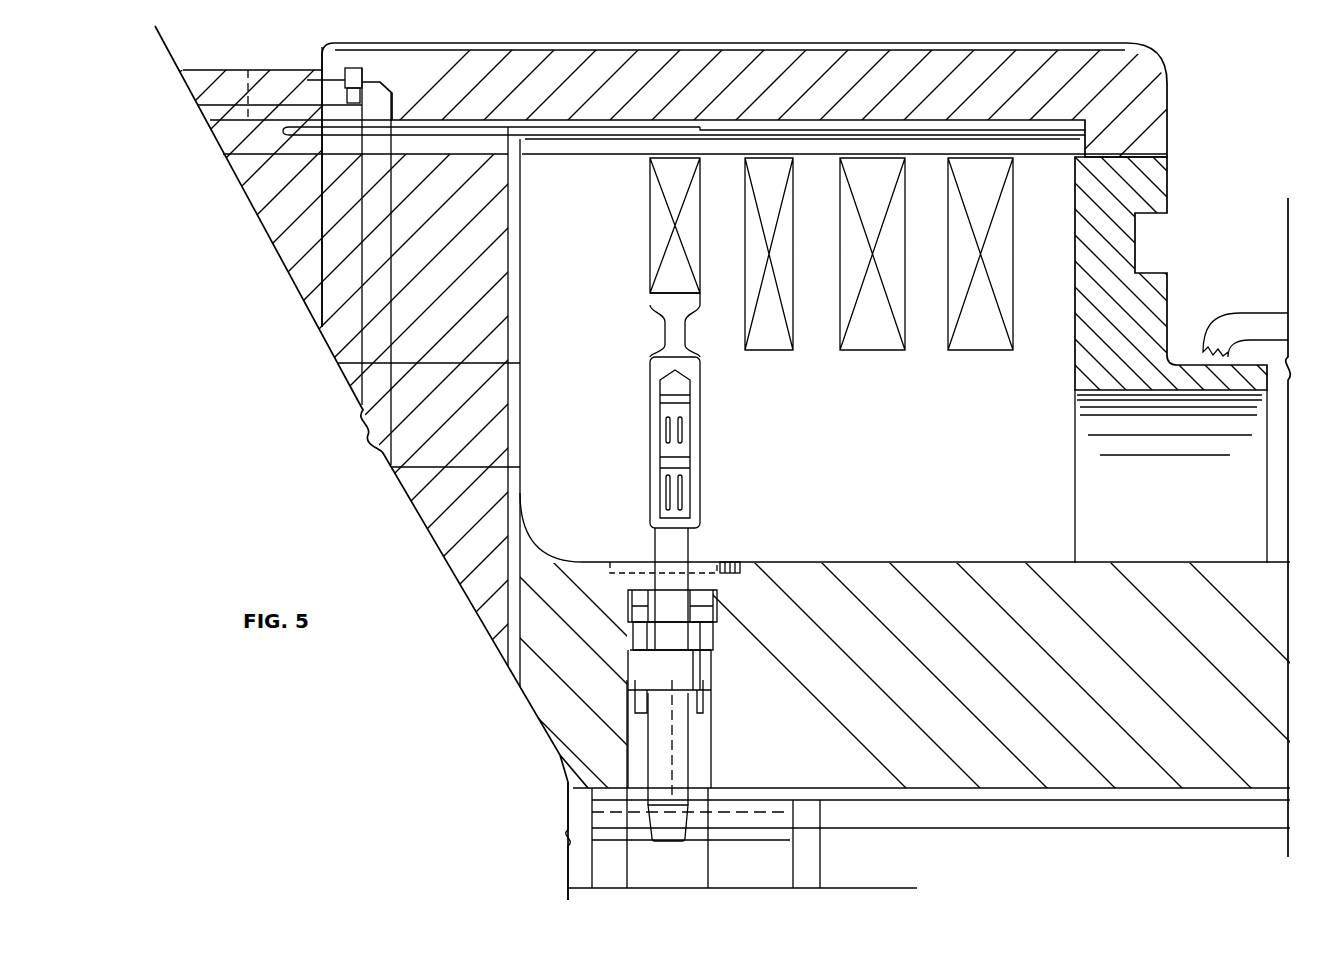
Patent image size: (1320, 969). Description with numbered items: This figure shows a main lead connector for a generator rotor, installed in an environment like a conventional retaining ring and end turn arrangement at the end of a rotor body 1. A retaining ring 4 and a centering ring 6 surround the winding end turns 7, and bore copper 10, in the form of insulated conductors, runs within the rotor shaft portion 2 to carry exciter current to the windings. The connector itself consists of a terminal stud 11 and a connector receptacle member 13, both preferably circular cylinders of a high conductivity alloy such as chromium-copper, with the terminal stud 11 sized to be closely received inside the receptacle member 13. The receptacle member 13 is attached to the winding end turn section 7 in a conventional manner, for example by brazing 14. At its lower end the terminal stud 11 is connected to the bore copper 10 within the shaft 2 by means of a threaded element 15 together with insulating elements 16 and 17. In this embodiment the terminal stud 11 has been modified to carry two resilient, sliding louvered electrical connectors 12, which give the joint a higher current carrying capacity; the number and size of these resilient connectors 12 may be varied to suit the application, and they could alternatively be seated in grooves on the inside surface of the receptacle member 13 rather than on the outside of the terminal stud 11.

The rotor body 1 is at (443, 312).
The rotor shaft portion 2 is at (1020, 656).
The retaining ring 4 is at (977, 100).
The centering ring 6 is at (1112, 244).
The winding end turn 7 is at (658, 242).
The bore copper 10 is at (1036, 827).
The terminal stud 11 is at (683, 583).
The resilient connector 12 is at (668, 439).
The connector receptacle member 13 is at (693, 440).
The brazing 14 is at (650, 292).
The threaded element 15 is at (628, 594).
The insulating element 16 is at (640, 637).
The insulating element 17 is at (713, 662).